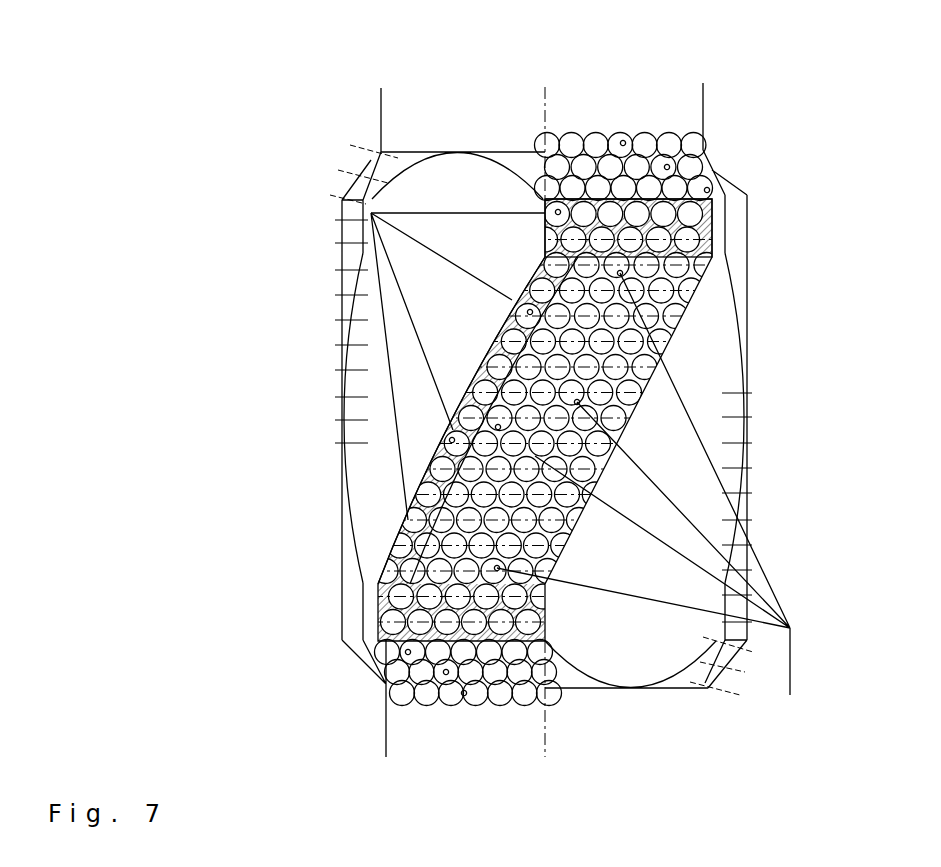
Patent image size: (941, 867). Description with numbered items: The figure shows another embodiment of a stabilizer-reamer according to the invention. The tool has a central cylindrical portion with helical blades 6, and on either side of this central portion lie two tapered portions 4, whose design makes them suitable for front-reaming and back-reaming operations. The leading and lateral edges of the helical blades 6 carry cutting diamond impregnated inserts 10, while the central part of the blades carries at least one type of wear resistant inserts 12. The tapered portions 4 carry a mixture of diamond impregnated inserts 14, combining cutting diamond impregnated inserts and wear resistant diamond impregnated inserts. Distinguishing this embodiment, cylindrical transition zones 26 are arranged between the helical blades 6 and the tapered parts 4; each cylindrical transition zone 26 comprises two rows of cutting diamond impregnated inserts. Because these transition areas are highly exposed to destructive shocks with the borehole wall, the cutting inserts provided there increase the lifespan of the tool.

The tapered portion 4 is at (352, 173).
The helical blade 6 is at (678, 353).
The cutting diamond impregnated insert 10 is at (371, 199).
The wear resistant insert 12 is at (708, 688).
The diamond impregnated insert 14 is at (707, 190).
The cylindrical transition zone 26 is at (712, 228).